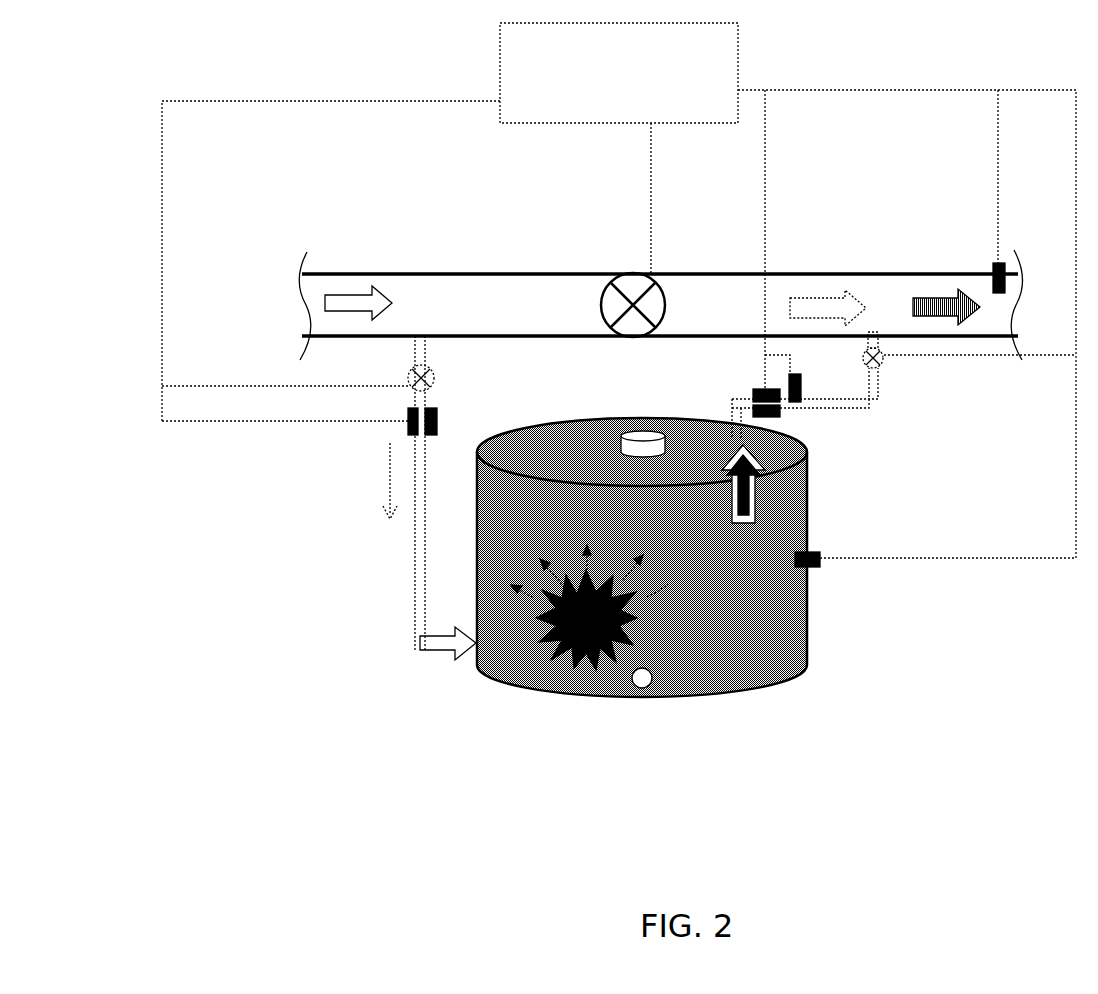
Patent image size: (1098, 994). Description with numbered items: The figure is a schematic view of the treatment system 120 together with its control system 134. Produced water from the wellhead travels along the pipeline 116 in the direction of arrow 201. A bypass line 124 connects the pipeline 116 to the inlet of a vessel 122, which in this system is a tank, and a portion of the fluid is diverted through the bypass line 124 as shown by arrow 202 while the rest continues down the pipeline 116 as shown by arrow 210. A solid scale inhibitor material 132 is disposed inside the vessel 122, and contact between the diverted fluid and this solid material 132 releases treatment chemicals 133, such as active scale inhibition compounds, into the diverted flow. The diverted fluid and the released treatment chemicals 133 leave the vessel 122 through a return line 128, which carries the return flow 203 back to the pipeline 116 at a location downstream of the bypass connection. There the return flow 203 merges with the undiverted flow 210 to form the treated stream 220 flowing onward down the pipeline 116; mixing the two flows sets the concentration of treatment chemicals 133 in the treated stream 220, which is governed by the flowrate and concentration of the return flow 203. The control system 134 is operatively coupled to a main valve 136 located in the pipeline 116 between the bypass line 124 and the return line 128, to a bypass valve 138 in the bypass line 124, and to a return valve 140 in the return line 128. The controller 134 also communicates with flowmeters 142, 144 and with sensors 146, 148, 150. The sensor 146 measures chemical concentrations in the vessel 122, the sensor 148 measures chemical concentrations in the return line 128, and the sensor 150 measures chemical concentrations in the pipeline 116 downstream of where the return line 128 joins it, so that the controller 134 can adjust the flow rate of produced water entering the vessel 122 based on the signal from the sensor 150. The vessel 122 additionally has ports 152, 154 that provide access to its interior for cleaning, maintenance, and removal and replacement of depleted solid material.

The treatment system 120 is at (326, 72).
The pipeline 116 is at (318, 274).
The arrow indicating fluid flow in the pipeline 201 is at (354, 298).
The control system 134 is at (619, 73).
The main valve 136 is at (650, 298).
The sensor 148 is at (793, 372).
The arrow indicating remaining flow 210 is at (830, 298).
The return valve 140 is at (878, 348).
The arrow indicating treated fluid stream 220 is at (948, 295).
The sensor 150 is at (995, 265).
The bypass valve 138 is at (436, 378).
The flowmeter 142 is at (438, 421).
The port 154 is at (634, 435).
The flowmeter 144 is at (758, 390).
The return line 128 is at (805, 410).
The treatment chemicals 133 is at (670, 584).
The return flow 203 is at (745, 522).
The sensor 146 is at (820, 560).
The vessel 122 is at (642, 557).
The solid scale inhibitor material 132 is at (586, 620).
The bypass line 124 is at (416, 587).
The arrow indicating diverted flow 202 is at (453, 660).
The port 152 is at (653, 683).